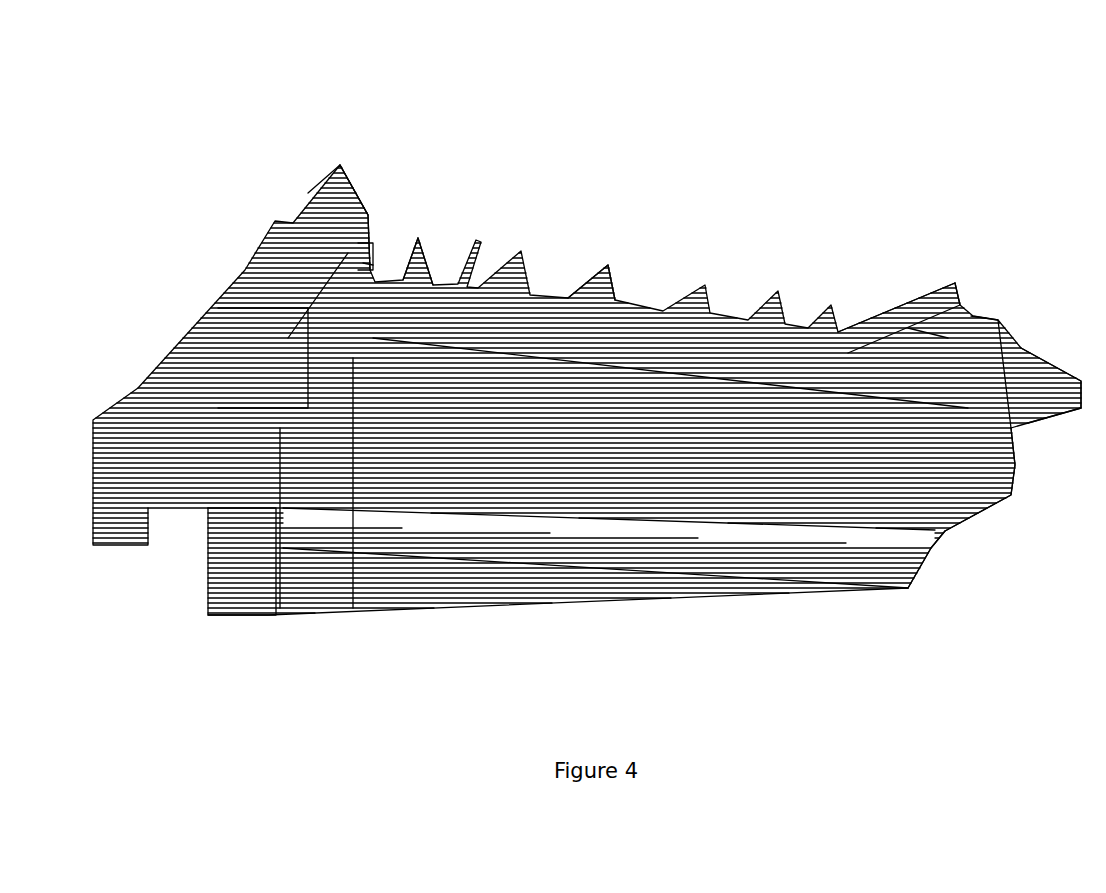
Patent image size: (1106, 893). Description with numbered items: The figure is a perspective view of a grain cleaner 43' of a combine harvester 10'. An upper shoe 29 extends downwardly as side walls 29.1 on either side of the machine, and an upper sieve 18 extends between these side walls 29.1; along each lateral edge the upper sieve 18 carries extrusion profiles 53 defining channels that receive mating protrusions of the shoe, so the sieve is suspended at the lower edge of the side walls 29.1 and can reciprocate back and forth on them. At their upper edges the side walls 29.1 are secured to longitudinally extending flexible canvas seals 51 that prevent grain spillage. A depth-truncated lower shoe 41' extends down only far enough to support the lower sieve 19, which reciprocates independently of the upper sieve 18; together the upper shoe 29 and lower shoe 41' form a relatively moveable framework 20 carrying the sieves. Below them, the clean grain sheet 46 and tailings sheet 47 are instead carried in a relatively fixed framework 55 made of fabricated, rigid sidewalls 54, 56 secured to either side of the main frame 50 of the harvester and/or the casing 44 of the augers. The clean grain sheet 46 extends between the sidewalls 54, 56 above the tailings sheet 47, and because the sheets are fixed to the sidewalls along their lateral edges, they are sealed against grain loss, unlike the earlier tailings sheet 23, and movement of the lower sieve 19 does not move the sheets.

The combine harvester 10' is at (595, 340).
The upper sieve 18 is at (540, 300).
The lower sieve 19 is at (425, 365).
The moveable framework 20 is at (366, 210).
The tailings sheet 23 is at (347, 243).
The upper shoe 29 is at (358, 242).
The side walls 29.1 is at (937, 330).
The lower shoe 41' is at (351, 539).
The grain cleaner 43' is at (1052, 330).
The casing 44 is at (230, 503).
The clean grain sheet 46 is at (630, 445).
The tailings sheet 47 is at (737, 495).
The main frame 50 is at (262, 333).
The flexible canvas seals 51 is at (327, 178).
The extrusion profiles 53 is at (410, 290).
The sidewall 54 is at (322, 455).
The fixed framework 55 is at (952, 524).
The sidewall 56 is at (980, 470).